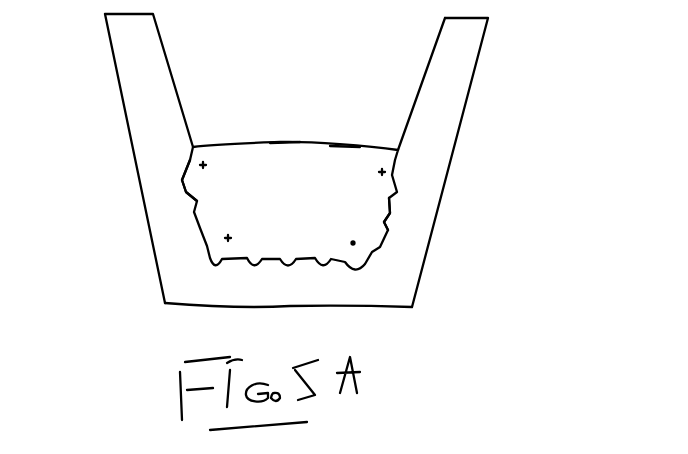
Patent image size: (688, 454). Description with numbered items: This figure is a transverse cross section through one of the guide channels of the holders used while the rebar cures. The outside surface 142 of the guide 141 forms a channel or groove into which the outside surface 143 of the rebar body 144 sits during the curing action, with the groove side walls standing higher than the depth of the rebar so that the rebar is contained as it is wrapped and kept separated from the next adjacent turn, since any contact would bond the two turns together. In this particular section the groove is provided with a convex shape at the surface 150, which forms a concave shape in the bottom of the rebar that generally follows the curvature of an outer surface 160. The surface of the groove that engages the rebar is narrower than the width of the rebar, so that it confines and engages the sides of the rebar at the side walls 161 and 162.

The guide 141 is at (215, 63).
The outside surface of the guide 142 is at (486, 98).
The outside surface of the rebar body 143 is at (237, 260).
The rebar body 144 is at (367, 127).
The surface 150 is at (303, 253).
The outer surface 160 is at (287, 147).
The side wall 161 is at (197, 200).
The side wall 162 is at (390, 212).